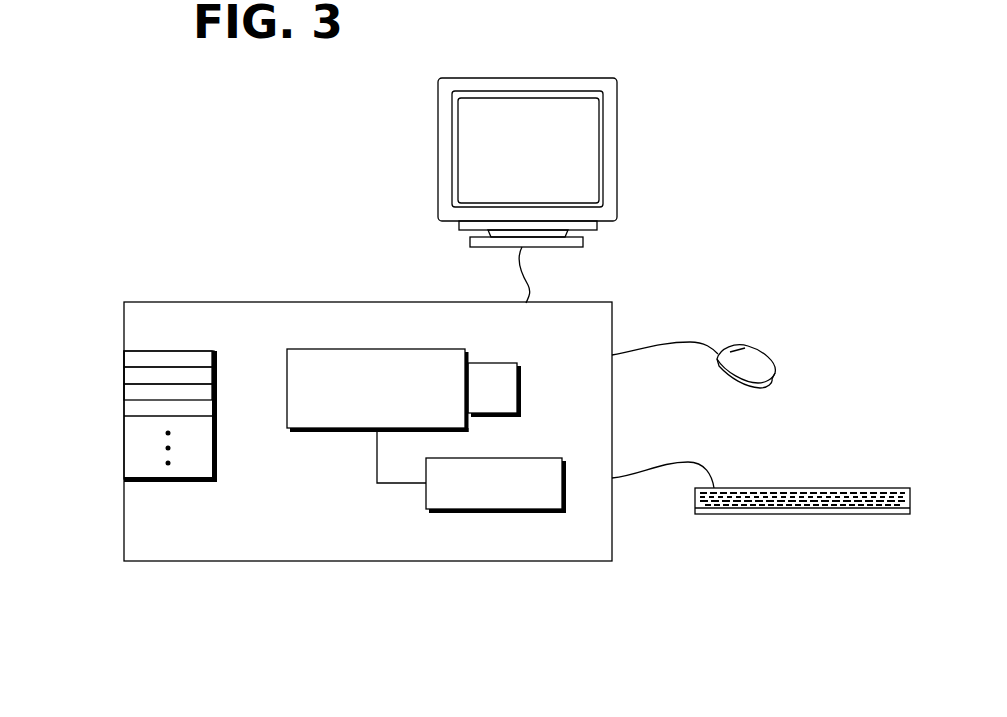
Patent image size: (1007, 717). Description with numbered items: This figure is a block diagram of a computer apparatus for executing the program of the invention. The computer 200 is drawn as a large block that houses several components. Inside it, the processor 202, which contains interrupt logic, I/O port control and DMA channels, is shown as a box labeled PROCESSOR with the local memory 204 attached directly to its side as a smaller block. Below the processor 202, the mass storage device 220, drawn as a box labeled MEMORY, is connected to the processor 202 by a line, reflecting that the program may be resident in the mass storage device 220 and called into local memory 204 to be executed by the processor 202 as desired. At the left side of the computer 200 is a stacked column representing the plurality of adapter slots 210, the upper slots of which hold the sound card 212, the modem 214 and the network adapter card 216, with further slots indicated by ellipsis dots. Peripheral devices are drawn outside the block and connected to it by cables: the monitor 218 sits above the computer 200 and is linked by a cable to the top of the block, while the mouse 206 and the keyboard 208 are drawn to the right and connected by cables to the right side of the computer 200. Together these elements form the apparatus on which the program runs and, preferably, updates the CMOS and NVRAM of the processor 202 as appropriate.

The computer 200 is at (219, 131).
The processor 202 is at (380, 349).
The local memory 204 is at (503, 363).
The mouse 206 is at (762, 352).
The keyboard 208 is at (843, 488).
The plurality of adapter slots 210 is at (153, 463).
The sound card 212 is at (124, 358).
The modem 214 is at (124, 376).
The network adapter card 216 is at (124, 392).
The monitor 218 is at (598, 78).
The mass storage device 220 is at (528, 458).